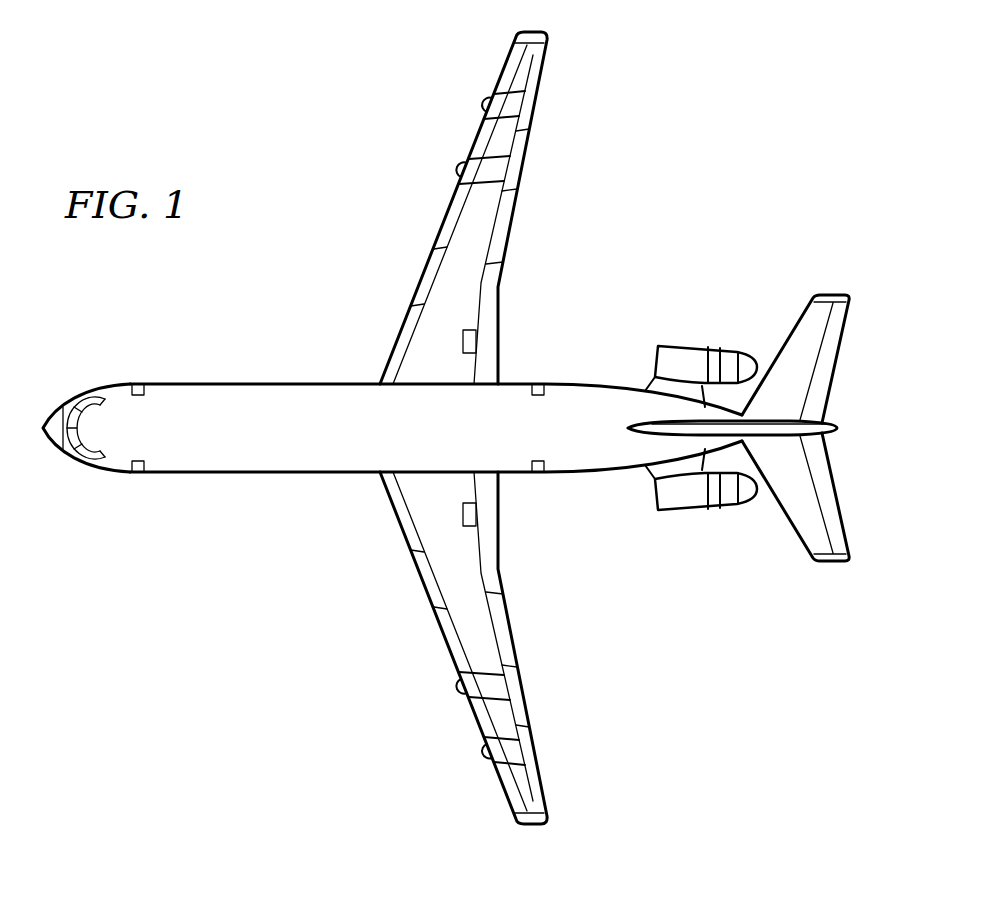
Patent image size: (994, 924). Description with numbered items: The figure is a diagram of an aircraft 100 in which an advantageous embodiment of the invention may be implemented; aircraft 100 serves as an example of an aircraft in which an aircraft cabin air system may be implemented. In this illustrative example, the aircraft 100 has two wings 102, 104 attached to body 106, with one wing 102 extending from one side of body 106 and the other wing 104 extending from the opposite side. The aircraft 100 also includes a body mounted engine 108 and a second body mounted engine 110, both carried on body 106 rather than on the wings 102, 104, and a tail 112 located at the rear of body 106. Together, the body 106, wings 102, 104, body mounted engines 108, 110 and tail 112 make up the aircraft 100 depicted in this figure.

The aircraft 100 is at (318, 165).
The wing 102 is at (442, 218).
The wing 104 is at (442, 638).
The body 106 is at (252, 383).
The body mounted engine 108 is at (695, 347).
The body mounted engine 110 is at (695, 509).
The tail 112 is at (835, 373).